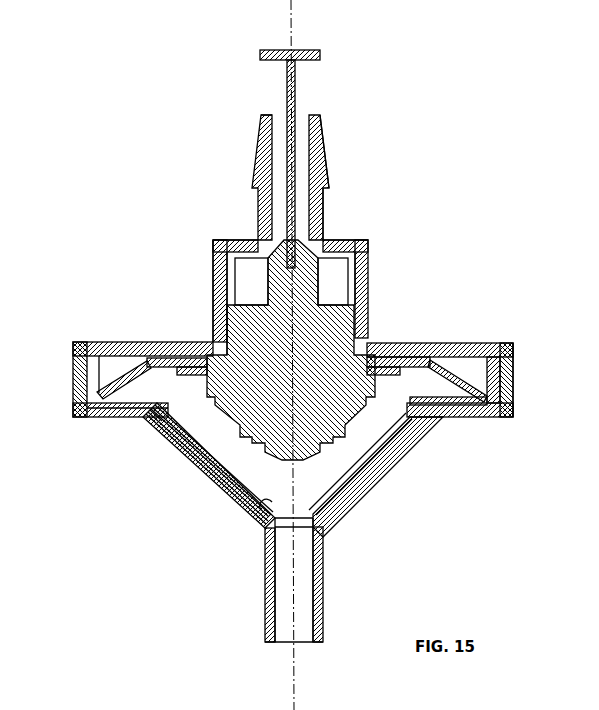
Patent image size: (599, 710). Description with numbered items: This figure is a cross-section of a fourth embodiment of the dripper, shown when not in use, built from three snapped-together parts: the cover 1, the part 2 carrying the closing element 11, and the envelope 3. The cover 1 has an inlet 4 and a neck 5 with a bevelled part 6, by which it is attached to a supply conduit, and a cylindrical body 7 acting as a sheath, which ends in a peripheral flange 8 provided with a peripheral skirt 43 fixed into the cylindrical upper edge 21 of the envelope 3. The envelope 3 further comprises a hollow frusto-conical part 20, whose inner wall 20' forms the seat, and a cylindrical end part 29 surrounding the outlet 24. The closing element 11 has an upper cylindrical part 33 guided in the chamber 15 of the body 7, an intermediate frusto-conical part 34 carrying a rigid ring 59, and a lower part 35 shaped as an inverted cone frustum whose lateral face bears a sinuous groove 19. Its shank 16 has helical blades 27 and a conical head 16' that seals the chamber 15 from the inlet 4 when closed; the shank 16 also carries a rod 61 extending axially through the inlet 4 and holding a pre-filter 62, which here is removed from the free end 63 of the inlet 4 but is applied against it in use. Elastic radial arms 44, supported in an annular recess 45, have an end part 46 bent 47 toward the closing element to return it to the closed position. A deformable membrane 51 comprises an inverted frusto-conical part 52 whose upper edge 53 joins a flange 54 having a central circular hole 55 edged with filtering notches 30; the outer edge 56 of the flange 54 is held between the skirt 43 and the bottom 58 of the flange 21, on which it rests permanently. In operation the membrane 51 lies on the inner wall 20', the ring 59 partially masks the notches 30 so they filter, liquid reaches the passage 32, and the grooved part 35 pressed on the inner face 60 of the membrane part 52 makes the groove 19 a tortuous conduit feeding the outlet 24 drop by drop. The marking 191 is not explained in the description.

The cover 1 is at (372, 275).
The part of the dripper 2 is at (332, 446).
The envelope 3 is at (186, 465).
The inlet 4 is at (300, 118).
The neck 5 is at (322, 212).
The bevelled part 6 is at (327, 157).
The cylindrical body 7 is at (368, 248).
The peripheral flange 8 is at (430, 343).
The closing element 11 is at (237, 433).
The chamber 15 is at (225, 250).
The upper shank 16 is at (334, 276).
The conical head 16' is at (302, 227).
The sinuous groove 19 is at (183, 405).
The hollow frusto-conical part 20 is at (334, 519).
The inner wall 20' is at (364, 467).
The cylindrical upper edge 21 is at (513, 382).
The outlet 24 is at (285, 640).
The peripheral helical blades 27 is at (340, 297).
The cylindrical end part 29 is at (323, 588).
The filtering notches 30 is at (403, 398).
The passage 32 is at (367, 446).
The upper cylindrical part 33 is at (335, 335).
The intermediate frusto-conical part 34 is at (212, 345).
The lower part having the shape of an inverted cone frustum 35 is at (223, 415).
The peripheral skirt 43 is at (508, 345).
The elastic radial arms 44 is at (180, 345).
The annular recess 45 is at (100, 342).
The end part 46 is at (120, 386).
The bend 47 is at (145, 345).
The deformable membrane 51 is at (246, 502).
The inverted frusto-conical part of the membrane 52 is at (235, 440).
The upper edge 53 is at (155, 410).
The flange 54 is at (110, 420).
The central circular hole 55 is at (393, 403).
The outer edge 56 is at (498, 405).
The bottom 58 is at (498, 410).
The rigid ring 59 is at (168, 345).
The inner face 60 is at (262, 522).
The rod 61 is at (293, 195).
The pre-filter 62 is at (318, 52).
The free end of the inlet 63 is at (268, 117).
The pipe inner line 191 is at (220, 413).